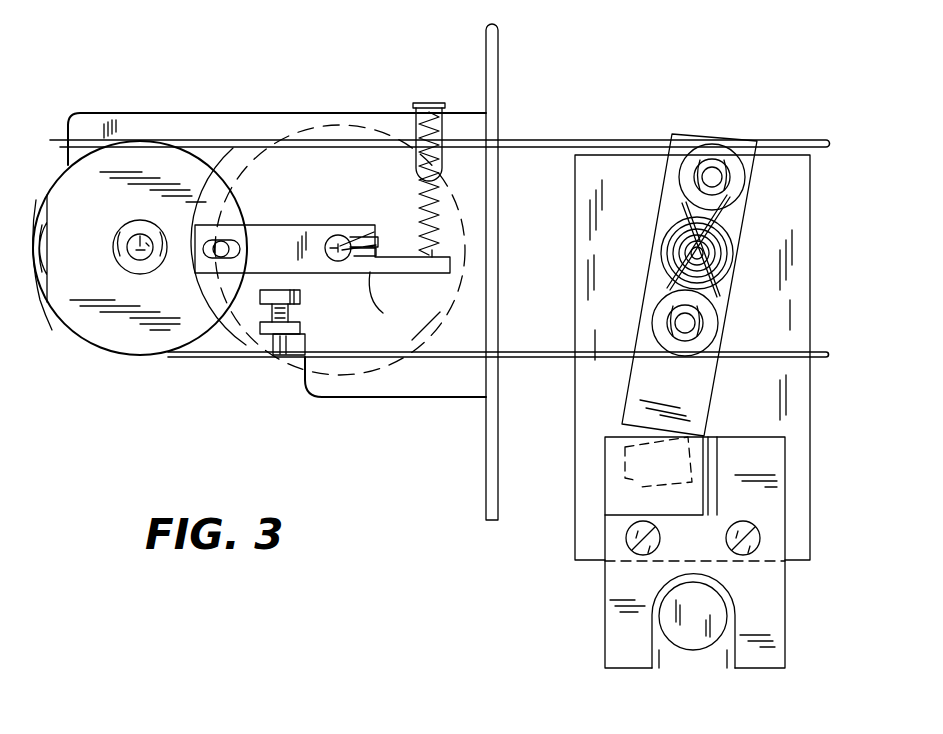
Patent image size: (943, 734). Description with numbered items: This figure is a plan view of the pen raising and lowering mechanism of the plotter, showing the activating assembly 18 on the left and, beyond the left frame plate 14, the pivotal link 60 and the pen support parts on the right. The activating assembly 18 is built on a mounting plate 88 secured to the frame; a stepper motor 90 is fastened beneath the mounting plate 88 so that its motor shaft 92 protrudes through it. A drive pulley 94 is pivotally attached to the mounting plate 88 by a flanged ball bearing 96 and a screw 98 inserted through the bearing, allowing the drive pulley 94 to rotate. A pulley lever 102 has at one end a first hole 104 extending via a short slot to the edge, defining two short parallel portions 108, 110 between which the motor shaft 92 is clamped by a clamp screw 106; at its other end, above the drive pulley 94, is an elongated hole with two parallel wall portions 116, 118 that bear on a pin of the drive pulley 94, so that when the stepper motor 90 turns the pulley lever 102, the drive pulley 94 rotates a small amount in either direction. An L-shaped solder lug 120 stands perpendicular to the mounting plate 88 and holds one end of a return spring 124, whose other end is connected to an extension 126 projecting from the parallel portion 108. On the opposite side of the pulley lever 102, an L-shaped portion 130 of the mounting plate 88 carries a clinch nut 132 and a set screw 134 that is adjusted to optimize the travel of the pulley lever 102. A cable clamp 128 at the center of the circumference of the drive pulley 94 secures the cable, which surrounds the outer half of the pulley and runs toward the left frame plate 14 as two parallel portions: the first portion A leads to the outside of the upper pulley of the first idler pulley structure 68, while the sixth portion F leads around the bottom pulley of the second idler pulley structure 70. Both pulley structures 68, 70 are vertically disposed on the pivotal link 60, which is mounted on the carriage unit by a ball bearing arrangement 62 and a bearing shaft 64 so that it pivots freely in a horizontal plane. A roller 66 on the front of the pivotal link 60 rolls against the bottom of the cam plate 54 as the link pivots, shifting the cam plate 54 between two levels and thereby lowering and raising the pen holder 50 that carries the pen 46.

The left frame plate 14 is at (498, 83).
The activating assembly 18 is at (236, 100).
The pen 46 is at (688, 650).
The pen holder 50 is at (626, 604).
The cam plate 54 is at (628, 501).
The pivotal link 60 is at (708, 392).
The ball bearing arrangement 62 is at (692, 254).
The bearing shaft 64 is at (728, 262).
The roller 66 is at (603, 466).
The first idler pulley structure 68 is at (692, 172).
The second idler pulley structure 70 is at (656, 318).
The mounting plate 88 is at (108, 125).
The stepper motor 90 is at (364, 398).
The motor shaft 92 is at (376, 235).
The drive pulley 94 is at (118, 338).
The flanged ball bearing 96 is at (122, 252).
The screw 98 is at (142, 236).
The pulley lever 102 is at (280, 212).
The first hole 104 is at (335, 235).
The clamp screw 106 is at (440, 312).
The short parallel portion 108 is at (362, 228).
The short parallel portion 110 is at (376, 275).
The parallel wall portion 116 is at (221, 280).
The parallel wall portion 118 is at (214, 237).
The L-shaped solder lug 120 is at (413, 105).
The return spring 124 is at (442, 182).
The extension 126 is at (465, 290).
The cable clamp 128 is at (47, 310).
The L-shaped portion 130 is at (300, 330).
The clinch nut 132 is at (276, 358).
The set screw 134 is at (300, 297).
The first cable portion A is at (200, 137).
The sixth cable portion F is at (198, 360).